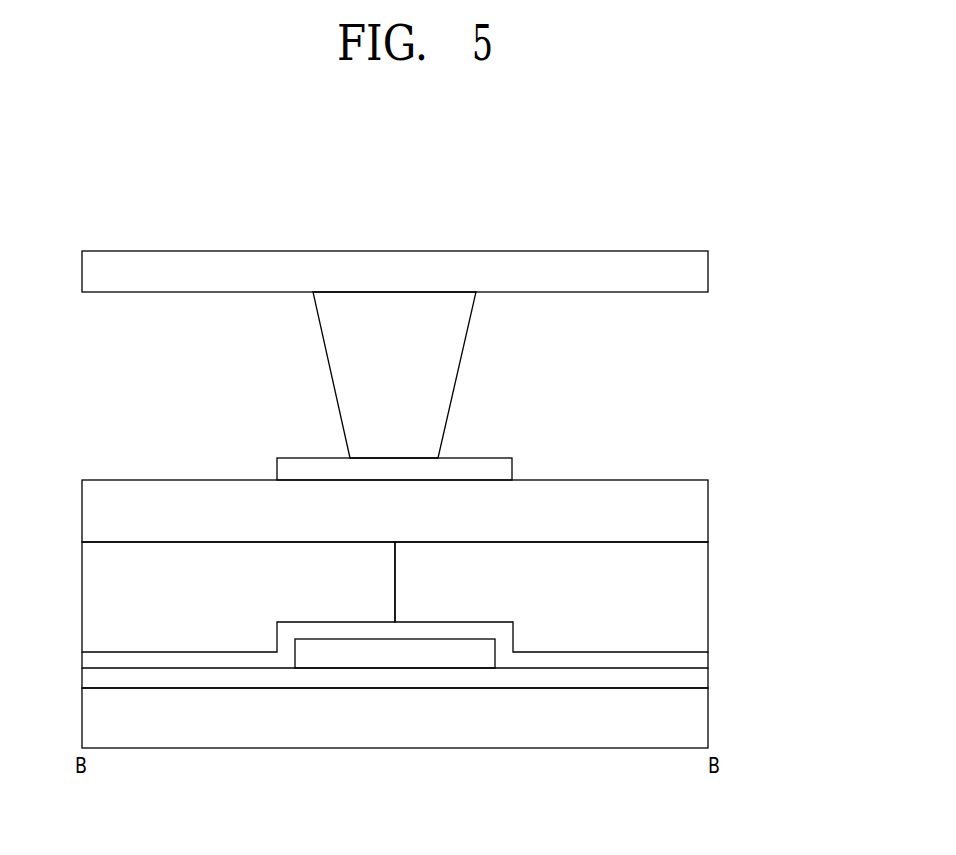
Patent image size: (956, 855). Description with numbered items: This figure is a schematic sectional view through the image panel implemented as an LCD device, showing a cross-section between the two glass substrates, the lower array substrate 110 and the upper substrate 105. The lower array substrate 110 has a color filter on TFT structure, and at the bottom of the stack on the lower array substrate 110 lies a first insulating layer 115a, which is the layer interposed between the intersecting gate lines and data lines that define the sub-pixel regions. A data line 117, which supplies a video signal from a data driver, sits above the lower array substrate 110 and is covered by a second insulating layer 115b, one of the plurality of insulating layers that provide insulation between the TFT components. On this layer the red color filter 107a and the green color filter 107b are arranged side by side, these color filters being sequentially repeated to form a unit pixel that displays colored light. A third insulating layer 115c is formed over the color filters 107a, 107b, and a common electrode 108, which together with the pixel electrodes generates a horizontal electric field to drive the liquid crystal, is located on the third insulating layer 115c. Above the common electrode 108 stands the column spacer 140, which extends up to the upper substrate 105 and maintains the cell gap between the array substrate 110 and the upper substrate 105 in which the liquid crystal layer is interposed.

The upper substrate 105 is at (702, 270).
The column spacer 140 is at (455, 367).
The common electrode 108 is at (510, 470).
The third insulating layer 115c is at (702, 510).
The red color filter 107a is at (167, 636).
The green color filter 107b is at (587, 637).
The data line 117 is at (395, 661).
The second insulating layer 115b is at (700, 660).
The first insulating layer 115a is at (700, 682).
The lower array substrate 110 is at (700, 718).